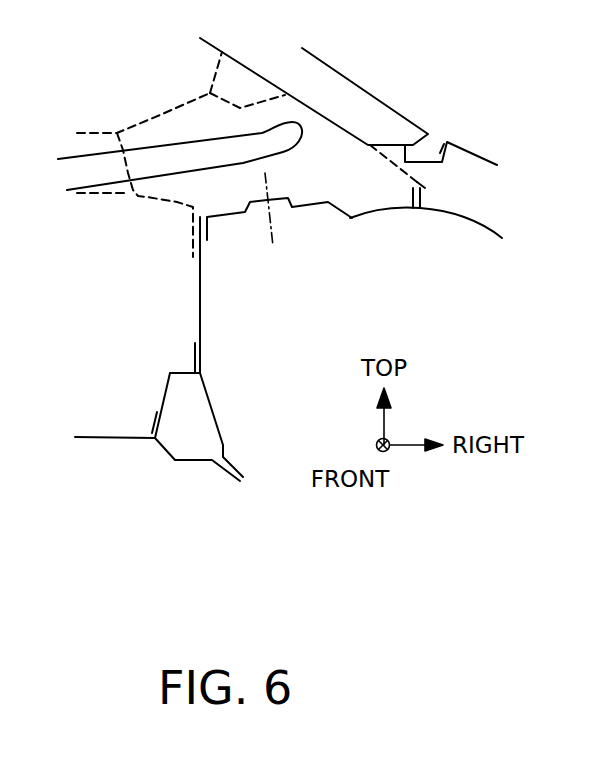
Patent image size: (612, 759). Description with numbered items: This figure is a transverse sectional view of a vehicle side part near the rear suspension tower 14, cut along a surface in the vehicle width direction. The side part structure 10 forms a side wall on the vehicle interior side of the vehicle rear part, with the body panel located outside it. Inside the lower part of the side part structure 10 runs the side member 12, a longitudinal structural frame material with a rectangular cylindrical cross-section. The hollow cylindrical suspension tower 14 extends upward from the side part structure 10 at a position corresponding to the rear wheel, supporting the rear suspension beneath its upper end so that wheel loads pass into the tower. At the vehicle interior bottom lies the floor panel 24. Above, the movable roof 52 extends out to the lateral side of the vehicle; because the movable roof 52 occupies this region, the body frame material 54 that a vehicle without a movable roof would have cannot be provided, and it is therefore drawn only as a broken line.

The side part structure 10 is at (200, 305).
The side member 12 is at (167, 385).
The suspension tower 14 is at (267, 197).
The floor panel 24 is at (112, 437).
The movable roof 52 is at (78, 156).
The body frame material 54 is at (158, 115).